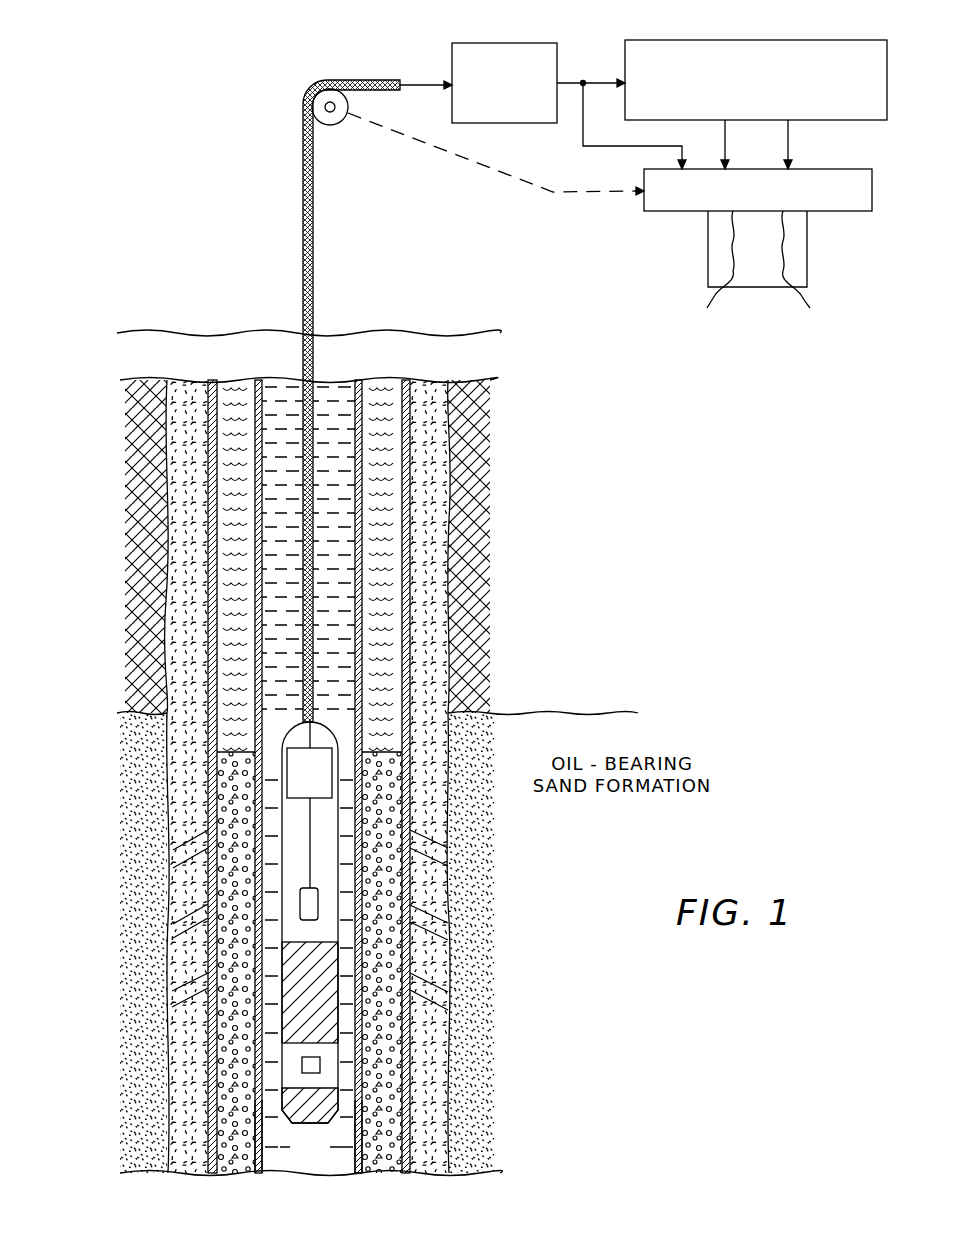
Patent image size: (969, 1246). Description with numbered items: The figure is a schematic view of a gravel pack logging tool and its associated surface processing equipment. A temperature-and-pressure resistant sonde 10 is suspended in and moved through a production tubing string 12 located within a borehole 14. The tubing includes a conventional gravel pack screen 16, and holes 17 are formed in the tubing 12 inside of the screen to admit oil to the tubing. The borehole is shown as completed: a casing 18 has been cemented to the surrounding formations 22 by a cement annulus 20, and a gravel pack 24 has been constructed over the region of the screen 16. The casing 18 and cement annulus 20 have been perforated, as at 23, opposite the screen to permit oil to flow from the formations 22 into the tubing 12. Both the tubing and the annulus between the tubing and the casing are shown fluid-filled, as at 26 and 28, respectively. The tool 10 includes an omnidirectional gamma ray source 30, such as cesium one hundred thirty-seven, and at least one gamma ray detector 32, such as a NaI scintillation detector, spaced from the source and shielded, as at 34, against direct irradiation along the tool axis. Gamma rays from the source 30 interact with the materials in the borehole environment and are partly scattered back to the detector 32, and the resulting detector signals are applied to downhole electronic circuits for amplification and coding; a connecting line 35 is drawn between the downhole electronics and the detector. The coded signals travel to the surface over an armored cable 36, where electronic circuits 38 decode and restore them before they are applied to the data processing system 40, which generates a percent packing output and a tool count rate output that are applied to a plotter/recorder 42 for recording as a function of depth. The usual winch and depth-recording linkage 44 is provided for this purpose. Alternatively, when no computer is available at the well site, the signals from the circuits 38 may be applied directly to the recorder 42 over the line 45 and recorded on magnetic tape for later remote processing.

The sonde 10 is at (292, 732).
The production tubing string 12 is at (262, 397).
The borehole 14 is at (168, 421).
The gravel pack screen 16 is at (253, 1160).
The holes 17 is at (356, 1157).
The casing 18 is at (407, 397).
The cement annulus 20 is at (434, 471).
The formations 22 is at (146, 603).
The perforations 23 is at (178, 855).
The gravel pack 24 is at (227, 950).
The fluid in tubing 26 is at (295, 511).
The fluid in annulus 28 is at (250, 511).
The omnidirectional gamma ray source 30 is at (311, 1075).
The gamma ray detector 32 is at (313, 906).
The shield 34 is at (325, 1012).
The connecting cable 35 is at (296, 799).
The armored cable 36 is at (313, 395).
The surface electronic circuits 38 is at (503, 43).
The data processing system 40 is at (740, 40).
The plotter/recorder 42 is at (852, 211).
The winch and depth-recording linkage 44 is at (439, 150).
The line 45 is at (616, 150).